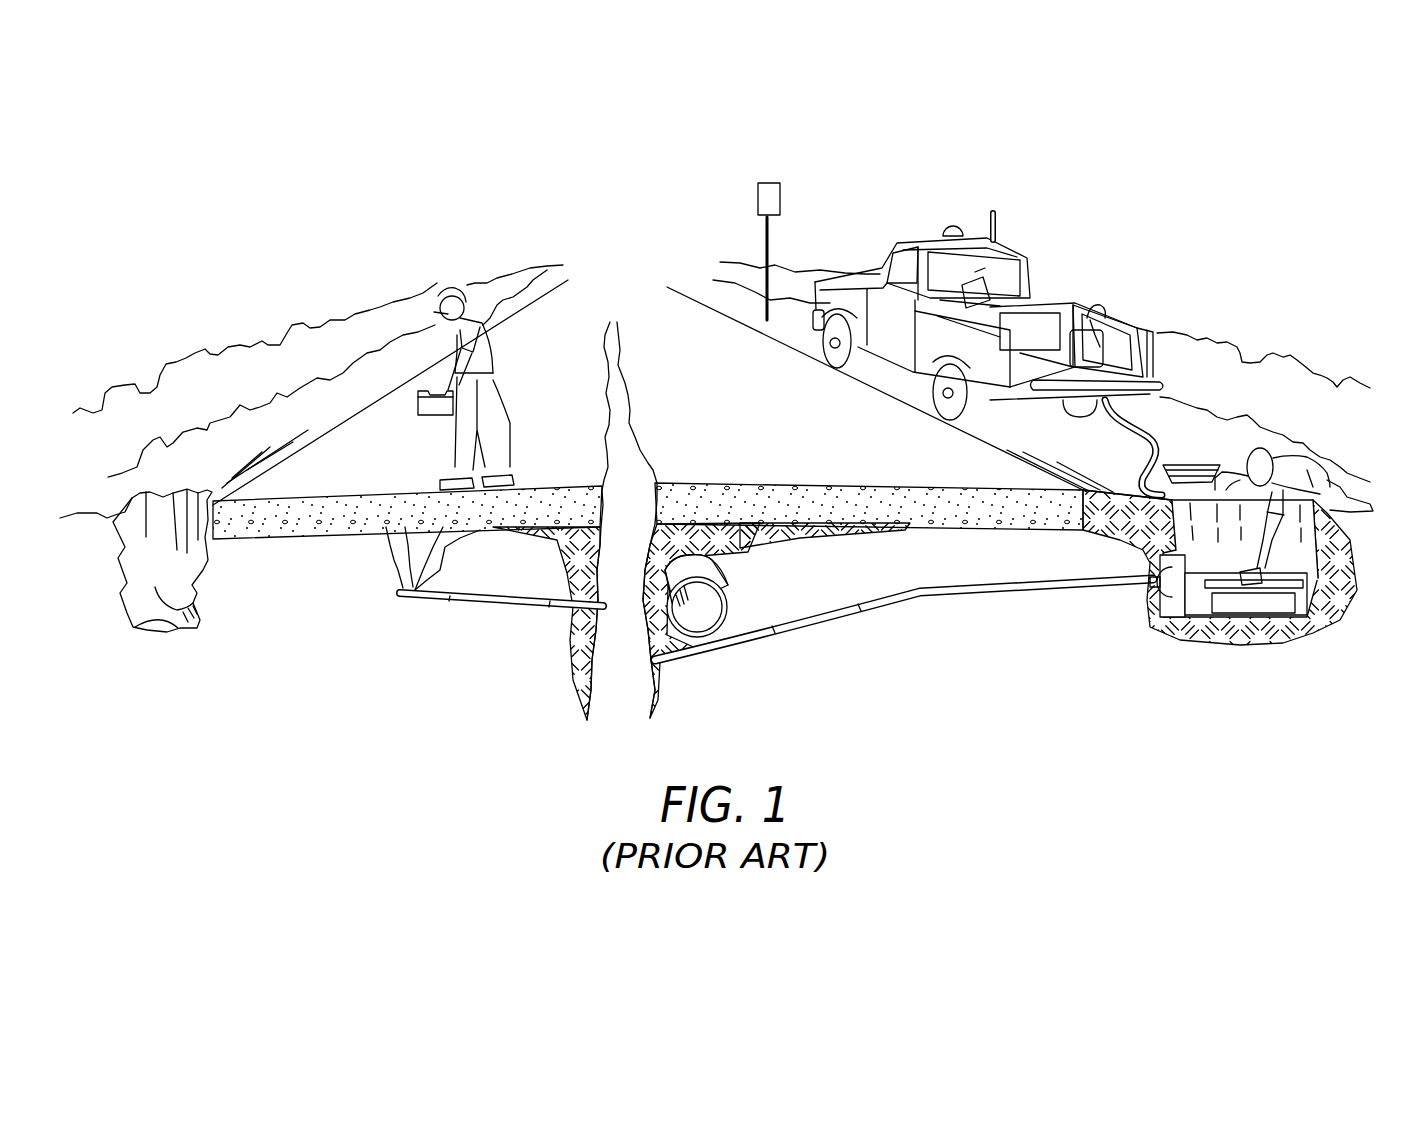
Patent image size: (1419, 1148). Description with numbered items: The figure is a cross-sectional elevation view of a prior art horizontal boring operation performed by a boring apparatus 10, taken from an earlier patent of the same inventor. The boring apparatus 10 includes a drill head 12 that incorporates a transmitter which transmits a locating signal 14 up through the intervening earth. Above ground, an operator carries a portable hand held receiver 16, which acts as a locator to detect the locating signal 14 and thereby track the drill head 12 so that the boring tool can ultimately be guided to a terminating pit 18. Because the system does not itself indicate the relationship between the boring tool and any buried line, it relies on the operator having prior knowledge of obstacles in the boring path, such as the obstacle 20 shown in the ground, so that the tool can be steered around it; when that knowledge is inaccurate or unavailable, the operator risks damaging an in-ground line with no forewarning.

The boring apparatus 10 is at (1230, 316).
The drill head 12 is at (403, 594).
The locating signal 14 is at (395, 560).
The portable hand held receiver 16 is at (425, 418).
The terminating pit 18 is at (155, 587).
The obstacle 20 is at (733, 605).